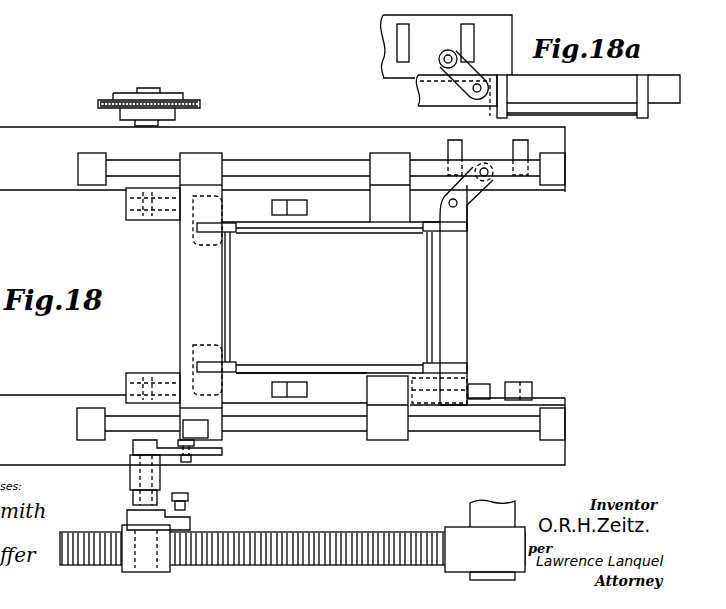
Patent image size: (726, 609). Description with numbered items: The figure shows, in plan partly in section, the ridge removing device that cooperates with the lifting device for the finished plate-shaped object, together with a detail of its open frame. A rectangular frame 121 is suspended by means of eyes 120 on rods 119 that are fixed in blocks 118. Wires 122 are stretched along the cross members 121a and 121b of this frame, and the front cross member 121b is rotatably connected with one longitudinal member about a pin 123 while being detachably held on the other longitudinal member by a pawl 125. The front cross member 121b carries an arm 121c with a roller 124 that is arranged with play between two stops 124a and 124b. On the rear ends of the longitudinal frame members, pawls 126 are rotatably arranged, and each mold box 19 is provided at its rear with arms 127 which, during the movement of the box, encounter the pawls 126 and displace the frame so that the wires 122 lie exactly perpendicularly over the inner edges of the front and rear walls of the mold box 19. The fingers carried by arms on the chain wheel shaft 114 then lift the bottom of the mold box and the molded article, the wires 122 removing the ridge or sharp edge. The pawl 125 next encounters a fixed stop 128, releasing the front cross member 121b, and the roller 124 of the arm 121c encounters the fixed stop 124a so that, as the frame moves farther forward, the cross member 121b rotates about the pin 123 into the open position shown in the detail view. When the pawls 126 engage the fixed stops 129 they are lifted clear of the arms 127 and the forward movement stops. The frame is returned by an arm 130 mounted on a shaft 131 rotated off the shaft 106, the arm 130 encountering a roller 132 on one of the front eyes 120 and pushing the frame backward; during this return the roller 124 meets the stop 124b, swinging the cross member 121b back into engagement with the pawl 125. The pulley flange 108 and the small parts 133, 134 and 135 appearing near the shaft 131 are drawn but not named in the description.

In FIG. 18, the mold box 19 is at (225, 276).
In FIG. 18, the shaft 106 is at (147, 88).
In FIG. 18, the pulley flange 108 is at (184, 99).
In FIG. 18, the chain wheel shaft 114 is at (500, 519).
In FIG. 18, the blocks 118 is at (321, 296).
In FIG. 18, the rods 119 is at (301, 161).
In FIG. 18, the eyes 120 is at (236, 437).
In FIG. 18, the frame 121 is at (393, 297).
In FIG. 18A, the frame 121 is at (421, 86).
In FIG. 18, the cross member 121a is at (201, 296).
In FIG. 18, the front cross member 121b is at (455, 301).
In FIG. 18A, the front cross member 121b is at (588, 96).
In FIG. 18, the arm 121c is at (470, 200).
In FIG. 18A, the arm 121c is at (468, 73).
In FIG. 18, the wires 122 is at (231, 297).
In FIG. 18A, the wires 122 is at (600, 106).
In FIG. 18, the pin 123 is at (458, 204).
In FIG. 18A, the pin 123 is at (473, 91).
In FIG. 18, the roller 124 is at (486, 162).
In FIG. 18A, the roller 124 is at (444, 52).
In FIG. 18, the fixed stop 124a is at (527, 156).
In FIG. 18A, the fixed stop 124a is at (486, 43).
In FIG. 18, the stop 124b is at (451, 155).
In FIG. 18A, the stop 124b is at (400, 44).
In FIG. 18, the pawl 125 is at (485, 384).
In FIG. 18, the pawls 126 is at (215, 197).
In FIG. 18, the arms 127 is at (193, 232).
In FIG. 18, the fixed stop 128 is at (527, 383).
In FIG. 18, the fixed stops 129 is at (288, 216).
In FIG. 18, the arm 130 is at (213, 456).
In FIG. 18, the shaft 131 is at (130, 473).
In FIG. 18, the roller 132 is at (184, 459).
In FIG. 18, the bracket 133 is at (166, 523).
In FIG. 18, the screw 134 is at (189, 503).
In FIG. 18, the bushing 135 is at (133, 498).